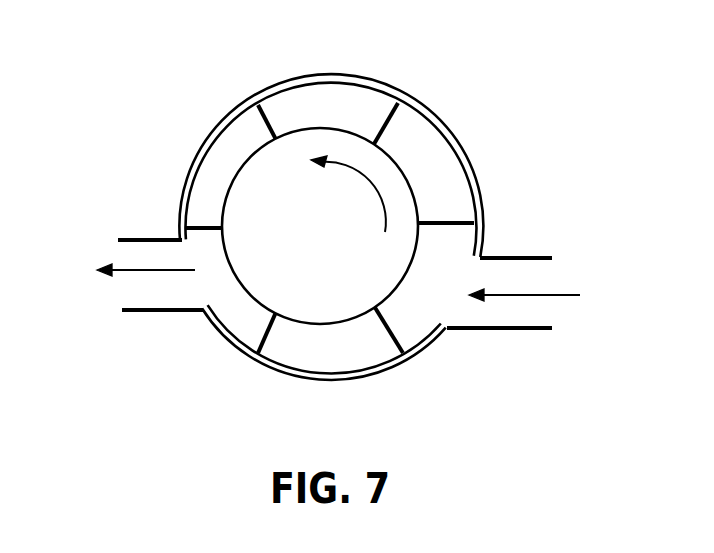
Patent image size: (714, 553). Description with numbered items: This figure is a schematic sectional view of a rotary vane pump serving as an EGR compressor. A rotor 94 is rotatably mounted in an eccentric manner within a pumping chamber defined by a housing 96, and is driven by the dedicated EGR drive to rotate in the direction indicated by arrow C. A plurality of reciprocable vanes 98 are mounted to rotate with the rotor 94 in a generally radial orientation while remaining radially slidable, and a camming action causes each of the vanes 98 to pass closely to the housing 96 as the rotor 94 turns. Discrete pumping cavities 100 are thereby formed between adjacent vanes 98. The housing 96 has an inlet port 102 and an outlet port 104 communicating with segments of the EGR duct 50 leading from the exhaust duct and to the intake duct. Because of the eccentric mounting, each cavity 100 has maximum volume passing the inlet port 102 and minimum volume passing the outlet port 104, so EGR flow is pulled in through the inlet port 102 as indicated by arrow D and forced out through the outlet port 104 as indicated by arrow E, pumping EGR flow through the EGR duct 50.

The EGR duct 50 is at (122, 238).
The rotor 94 is at (314, 244).
The housing 96 is at (363, 77).
The reciprocable vanes 98 is at (282, 132).
The pumping cavities 100 is at (348, 122).
The inlet port 102 is at (457, 307).
The outlet port 104 is at (182, 287).